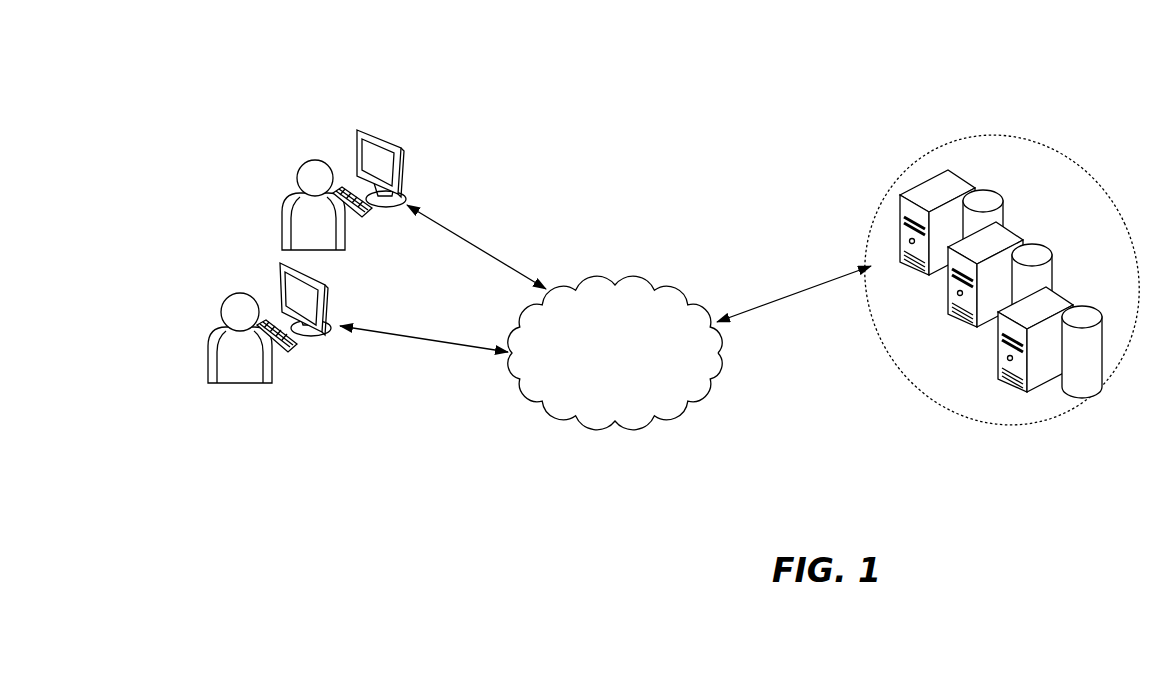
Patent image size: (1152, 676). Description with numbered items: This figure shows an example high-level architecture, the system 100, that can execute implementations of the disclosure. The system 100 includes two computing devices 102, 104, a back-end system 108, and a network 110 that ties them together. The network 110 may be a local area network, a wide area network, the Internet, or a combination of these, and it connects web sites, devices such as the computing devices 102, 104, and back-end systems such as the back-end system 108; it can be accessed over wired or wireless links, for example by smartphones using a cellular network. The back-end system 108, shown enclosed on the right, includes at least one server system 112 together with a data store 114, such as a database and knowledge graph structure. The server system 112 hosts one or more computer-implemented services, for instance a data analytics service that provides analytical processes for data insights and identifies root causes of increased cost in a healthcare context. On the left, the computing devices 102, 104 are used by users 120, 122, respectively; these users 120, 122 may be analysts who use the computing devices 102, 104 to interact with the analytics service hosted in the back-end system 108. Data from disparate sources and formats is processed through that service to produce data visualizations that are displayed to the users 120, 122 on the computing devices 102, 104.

The system 100 is at (897, 48).
The computing device 102 is at (402, 167).
The computing device 104 is at (330, 300).
The back-end system 108 is at (1057, 193).
The network 110 is at (617, 282).
The server system 112 is at (928, 181).
The data store 114 is at (983, 188).
The user 120 is at (308, 160).
The user 122 is at (233, 292).